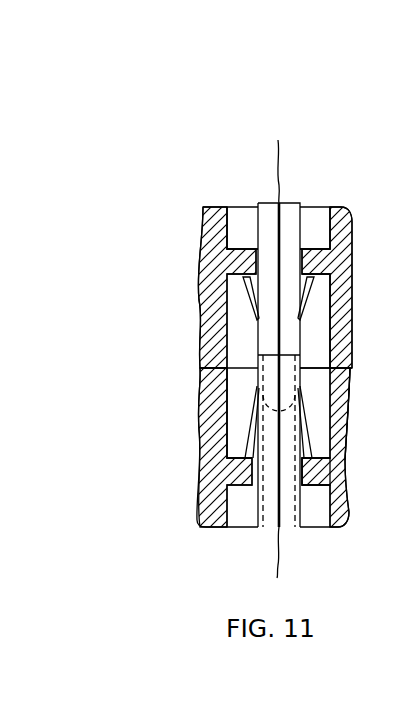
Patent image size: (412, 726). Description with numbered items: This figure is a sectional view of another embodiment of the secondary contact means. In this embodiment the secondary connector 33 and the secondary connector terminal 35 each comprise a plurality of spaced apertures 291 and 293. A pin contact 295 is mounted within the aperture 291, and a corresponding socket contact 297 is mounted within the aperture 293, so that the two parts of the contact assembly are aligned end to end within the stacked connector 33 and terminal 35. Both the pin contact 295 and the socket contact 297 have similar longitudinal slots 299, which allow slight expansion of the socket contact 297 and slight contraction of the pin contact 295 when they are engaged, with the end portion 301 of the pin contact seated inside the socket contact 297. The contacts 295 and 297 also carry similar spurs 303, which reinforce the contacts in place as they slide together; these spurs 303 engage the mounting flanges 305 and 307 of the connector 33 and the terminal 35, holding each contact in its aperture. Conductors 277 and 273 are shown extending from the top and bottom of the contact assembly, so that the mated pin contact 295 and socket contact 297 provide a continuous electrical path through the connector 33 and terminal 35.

The secondary connector 33 is at (346, 423).
The secondary connector terminal 35 is at (348, 262).
The lower conductor wire 273 is at (281, 558).
The upper conductor wire 277 is at (283, 152).
The aperture 291 is at (322, 306).
The aperture 293 is at (351, 406).
The pin contact 295 is at (265, 323).
The socket contact 297 is at (245, 428).
The longitudinal slot 299 is at (282, 328).
The end portion 301 is at (298, 400).
The spur 303 is at (250, 292).
The mounting flange 305 is at (313, 250).
The mounting flange 307 is at (320, 478).